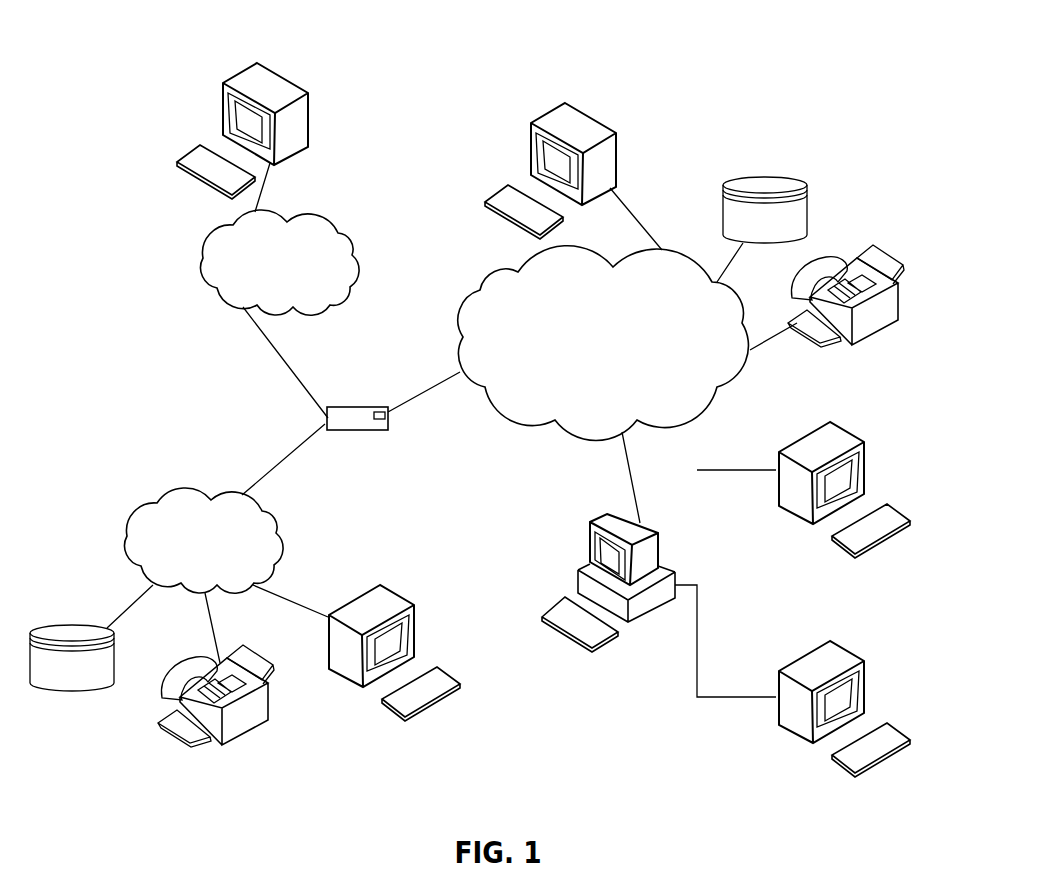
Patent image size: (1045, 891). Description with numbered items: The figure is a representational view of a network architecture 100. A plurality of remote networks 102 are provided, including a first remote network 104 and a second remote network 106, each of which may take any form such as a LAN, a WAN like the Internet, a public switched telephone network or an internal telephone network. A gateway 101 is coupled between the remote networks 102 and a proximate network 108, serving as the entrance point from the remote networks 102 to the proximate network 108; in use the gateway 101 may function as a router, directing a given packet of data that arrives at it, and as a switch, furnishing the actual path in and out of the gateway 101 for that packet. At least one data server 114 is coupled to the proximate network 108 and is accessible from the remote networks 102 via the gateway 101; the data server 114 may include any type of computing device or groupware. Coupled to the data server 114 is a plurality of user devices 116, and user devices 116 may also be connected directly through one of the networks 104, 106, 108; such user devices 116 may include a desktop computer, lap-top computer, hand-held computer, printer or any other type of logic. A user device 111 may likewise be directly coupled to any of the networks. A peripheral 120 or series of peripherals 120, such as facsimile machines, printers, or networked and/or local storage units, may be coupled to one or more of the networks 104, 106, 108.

The architecture 100 is at (162, 48).
The gateway 101 is at (340, 407).
The remote networks 102 is at (190, 320).
The first remote network 104 is at (130, 520).
The second remote network 106 is at (350, 233).
The proximate network 108 is at (712, 405).
The user device 111 is at (617, 133).
The data server 114 is at (590, 540).
The user devices 116 is at (308, 94).
The peripheral 120 is at (807, 185).